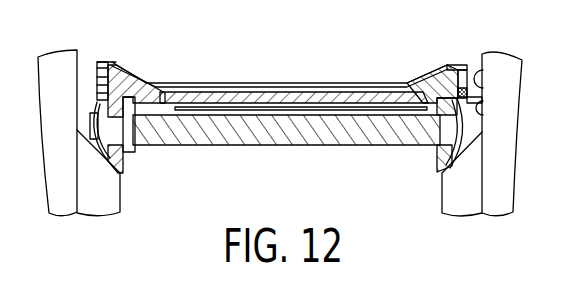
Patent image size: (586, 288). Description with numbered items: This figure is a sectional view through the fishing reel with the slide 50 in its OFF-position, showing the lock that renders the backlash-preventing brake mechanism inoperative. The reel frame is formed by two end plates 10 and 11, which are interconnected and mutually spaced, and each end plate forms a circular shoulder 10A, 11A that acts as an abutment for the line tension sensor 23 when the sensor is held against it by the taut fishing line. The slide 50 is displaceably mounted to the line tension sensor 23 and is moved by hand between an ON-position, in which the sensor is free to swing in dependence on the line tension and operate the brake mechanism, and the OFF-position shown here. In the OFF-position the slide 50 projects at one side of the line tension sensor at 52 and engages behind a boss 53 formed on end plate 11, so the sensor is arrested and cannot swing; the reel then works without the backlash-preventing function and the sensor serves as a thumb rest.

The end plate 10 is at (65, 193).
The circular shoulder 10A is at (95, 193).
The end plate 11 is at (507, 135).
The circular shoulder 11A is at (473, 197).
The line tension sensor 23 is at (360, 85).
The slide 50 is at (373, 118).
The projecting part of slide 52 is at (485, 107).
The boss 53 is at (482, 73).